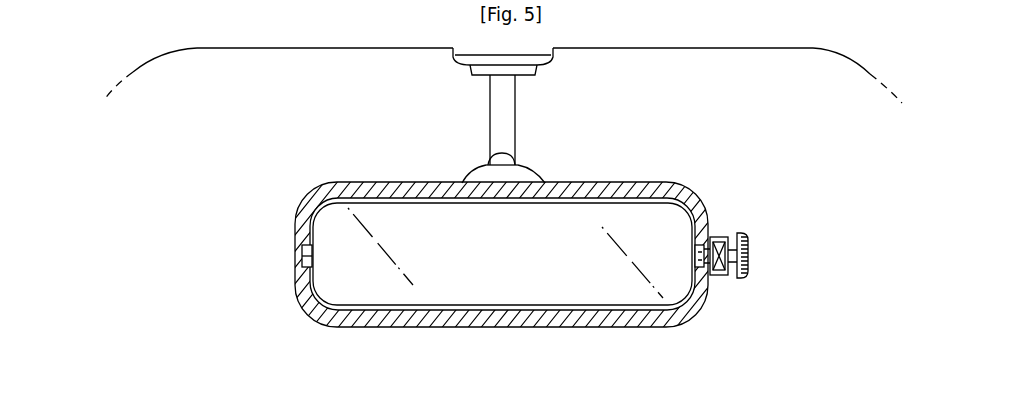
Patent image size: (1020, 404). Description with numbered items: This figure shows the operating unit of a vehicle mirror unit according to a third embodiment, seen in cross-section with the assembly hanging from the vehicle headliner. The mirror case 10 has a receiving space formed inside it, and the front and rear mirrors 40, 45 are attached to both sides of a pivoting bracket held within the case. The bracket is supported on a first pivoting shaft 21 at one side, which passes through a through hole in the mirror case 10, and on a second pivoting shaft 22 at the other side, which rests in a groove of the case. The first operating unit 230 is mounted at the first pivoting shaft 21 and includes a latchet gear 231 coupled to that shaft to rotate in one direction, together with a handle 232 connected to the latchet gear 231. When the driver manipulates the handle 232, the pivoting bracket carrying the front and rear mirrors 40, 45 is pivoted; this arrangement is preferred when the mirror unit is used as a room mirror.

The mirror case 10 is at (400, 320).
The first pivoting shaft 21 is at (708, 270).
The second pivoting shaft 22 is at (297, 287).
The front mirror 40 is at (502, 301).
The rear mirror 45 is at (507, 287).
The first operating unit 230 is at (772, 206).
The latchet gear 231 is at (723, 237).
The handle 232 is at (743, 212).